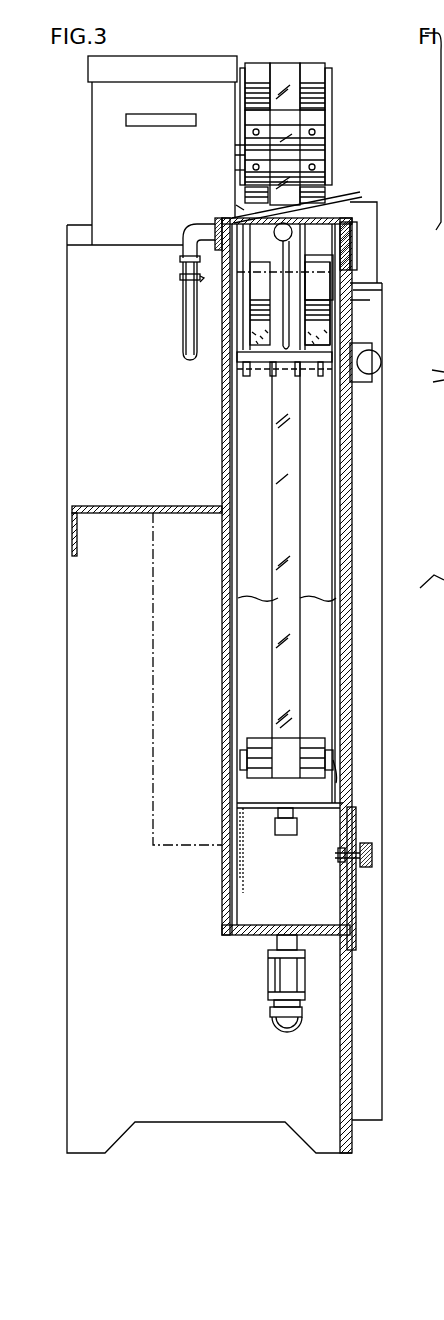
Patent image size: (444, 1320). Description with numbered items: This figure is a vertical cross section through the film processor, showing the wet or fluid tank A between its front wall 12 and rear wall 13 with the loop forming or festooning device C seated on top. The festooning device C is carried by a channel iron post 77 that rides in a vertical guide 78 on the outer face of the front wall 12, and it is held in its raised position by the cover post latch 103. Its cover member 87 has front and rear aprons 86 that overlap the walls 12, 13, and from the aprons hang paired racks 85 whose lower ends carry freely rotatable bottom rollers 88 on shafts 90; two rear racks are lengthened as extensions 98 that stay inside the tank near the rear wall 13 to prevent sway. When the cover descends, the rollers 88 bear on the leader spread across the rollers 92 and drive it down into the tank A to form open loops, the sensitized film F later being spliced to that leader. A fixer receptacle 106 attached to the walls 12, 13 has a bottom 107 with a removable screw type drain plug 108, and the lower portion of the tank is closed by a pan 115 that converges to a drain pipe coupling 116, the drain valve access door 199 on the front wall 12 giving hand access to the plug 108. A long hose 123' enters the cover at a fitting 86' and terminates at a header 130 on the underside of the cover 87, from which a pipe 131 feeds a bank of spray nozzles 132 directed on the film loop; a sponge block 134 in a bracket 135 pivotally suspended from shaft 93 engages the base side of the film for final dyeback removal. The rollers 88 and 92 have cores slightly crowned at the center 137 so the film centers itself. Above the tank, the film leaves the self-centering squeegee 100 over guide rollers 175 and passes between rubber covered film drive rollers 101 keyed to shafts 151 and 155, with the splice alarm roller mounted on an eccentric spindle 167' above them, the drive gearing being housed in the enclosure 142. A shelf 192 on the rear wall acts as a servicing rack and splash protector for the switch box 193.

The wet tank A is at (210, 1124).
The front wall 12 is at (350, 1138).
The rear wall 13 is at (235, 800).
The channel iron post 77 is at (370, 213).
The vertical guide 78 is at (382, 470).
The racks 85 is at (287, 601).
The aprons 86 is at (376, 246).
The flange 86' is at (184, 240).
The cover member 87 is at (352, 240).
The bottom rollers 88 is at (314, 740).
The shafts 90 is at (333, 760).
The rollers 92 is at (310, 276).
The shaft 93 is at (356, 300).
The rack extensions 98 is at (240, 888).
The squeegee 100 is at (319, 115).
The film drive rollers 101 is at (310, 200).
The cover post latch 103 is at (386, 366).
The fixer receptacle 106 is at (345, 803).
The bottom 107 is at (326, 814).
The drain plug 108 is at (280, 838).
The pan 115 is at (225, 933).
The drain pipe coupling 116 is at (275, 978).
The hose 123' is at (166, 292).
The header 130 is at (242, 220).
The pipe 131 is at (245, 360).
The spray nozzles 132 is at (297, 378).
The sponge block 134 is at (315, 345).
The bracket 135 is at (330, 325).
The crowned periphery 137 is at (272, 770).
The enclosure 142 is at (180, 64).
The shaft 151 is at (238, 210).
The shaft 155 is at (238, 175).
The eccentric spindle 167' is at (213, 145).
The guide rollers 175 is at (255, 68).
The shelf 192 is at (147, 506).
The switch box 193 is at (150, 700).
The drain valve access door 199 is at (357, 890).
The festooning device C is at (350, 180).
The sensitized film F is at (289, 66).